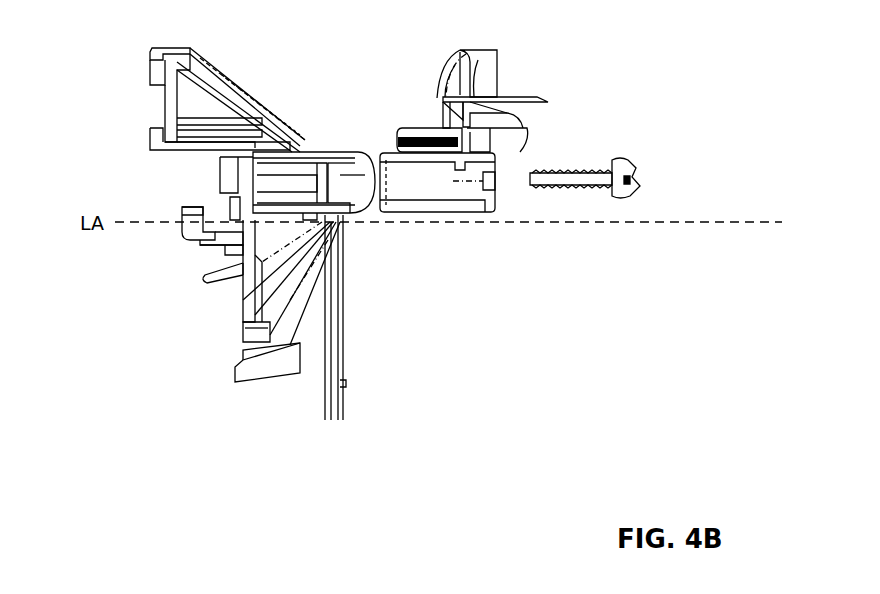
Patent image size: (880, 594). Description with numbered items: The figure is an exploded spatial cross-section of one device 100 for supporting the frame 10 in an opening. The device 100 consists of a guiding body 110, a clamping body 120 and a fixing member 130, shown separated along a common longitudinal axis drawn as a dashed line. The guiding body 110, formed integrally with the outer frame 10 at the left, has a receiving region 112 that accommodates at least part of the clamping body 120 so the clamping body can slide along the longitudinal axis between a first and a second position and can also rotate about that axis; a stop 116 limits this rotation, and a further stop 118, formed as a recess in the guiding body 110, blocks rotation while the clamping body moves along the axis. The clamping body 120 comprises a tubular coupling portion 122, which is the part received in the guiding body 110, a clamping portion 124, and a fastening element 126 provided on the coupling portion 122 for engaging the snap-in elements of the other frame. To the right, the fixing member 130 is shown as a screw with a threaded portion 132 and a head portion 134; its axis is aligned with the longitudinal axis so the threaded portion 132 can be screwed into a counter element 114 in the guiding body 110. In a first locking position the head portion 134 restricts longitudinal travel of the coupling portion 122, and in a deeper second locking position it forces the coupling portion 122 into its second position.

The frame 10 is at (297, 323).
The device 100 is at (487, 288).
The guiding body 110 is at (347, 212).
The receiving region 112 is at (340, 250).
The counter element 114 is at (300, 325).
The stop 116 is at (337, 193).
The further stop 118 is at (278, 197).
The clamping body 120 is at (533, 92).
The coupling portion 122 is at (405, 248).
The clamping portion 124 is at (460, 97).
The fastening element 126 is at (505, 158).
The fixing member 130 is at (570, 250).
The threaded portion 132 is at (587, 223).
The head portion 134 is at (637, 177).